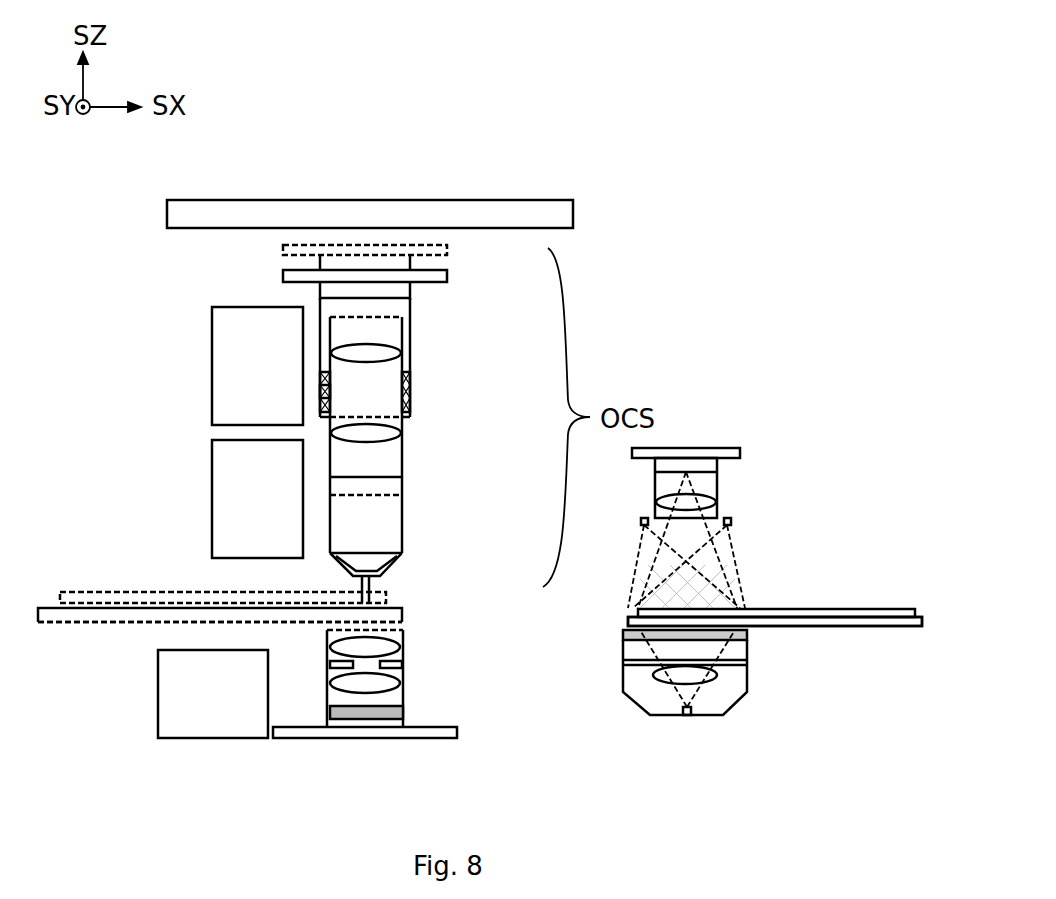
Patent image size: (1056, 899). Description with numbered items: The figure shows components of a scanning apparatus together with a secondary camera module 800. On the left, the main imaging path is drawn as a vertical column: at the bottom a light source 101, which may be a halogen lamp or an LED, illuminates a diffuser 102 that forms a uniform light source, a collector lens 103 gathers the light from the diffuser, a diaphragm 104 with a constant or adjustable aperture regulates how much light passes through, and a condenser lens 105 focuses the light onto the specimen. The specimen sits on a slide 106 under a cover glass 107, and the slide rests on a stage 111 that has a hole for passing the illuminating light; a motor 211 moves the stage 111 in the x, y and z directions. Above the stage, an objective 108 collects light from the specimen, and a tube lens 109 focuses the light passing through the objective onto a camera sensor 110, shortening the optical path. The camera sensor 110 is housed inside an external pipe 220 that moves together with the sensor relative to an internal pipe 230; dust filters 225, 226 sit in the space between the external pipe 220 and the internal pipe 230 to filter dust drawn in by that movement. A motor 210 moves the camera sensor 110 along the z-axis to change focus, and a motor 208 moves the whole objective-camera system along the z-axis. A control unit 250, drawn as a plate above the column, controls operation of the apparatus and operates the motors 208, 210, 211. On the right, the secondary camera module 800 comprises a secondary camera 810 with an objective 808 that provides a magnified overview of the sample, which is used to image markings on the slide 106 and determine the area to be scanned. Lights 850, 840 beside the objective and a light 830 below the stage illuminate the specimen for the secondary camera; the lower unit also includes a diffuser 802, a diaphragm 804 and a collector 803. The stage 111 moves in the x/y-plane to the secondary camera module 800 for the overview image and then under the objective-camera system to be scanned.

The control unit 250 is at (560, 212).
The camera sensor 110 is at (326, 300).
The external pipe 220 is at (410, 312).
The internal pipe 230 is at (410, 340).
The tube lens 109 is at (410, 358).
The dust filter 225 is at (410, 383).
The dust filter 226 is at (331, 398).
The motor 210 is at (222, 362).
The motor 208 is at (222, 496).
The objective 108 is at (390, 520).
The cover glass 107 is at (120, 592).
The slide 106 is at (55, 607).
The stage 111 is at (63, 623).
The motor 211 is at (172, 723).
The condenser lens 105 is at (396, 651).
The diaphragm 104 is at (327, 662).
The collector lens 103 is at (396, 689).
The diffuser 102 is at (403, 716).
The light source 101 is at (330, 723).
The secondary camera module 800 is at (850, 502).
The secondary camera 810 is at (727, 460).
The objective 808 is at (717, 502).
The light 850 is at (643, 518).
The light 840 is at (735, 523).
The diffuser 802 is at (747, 637).
The diaphragm 804 is at (750, 665).
The collector 803 is at (748, 682).
The light 830 is at (699, 715).